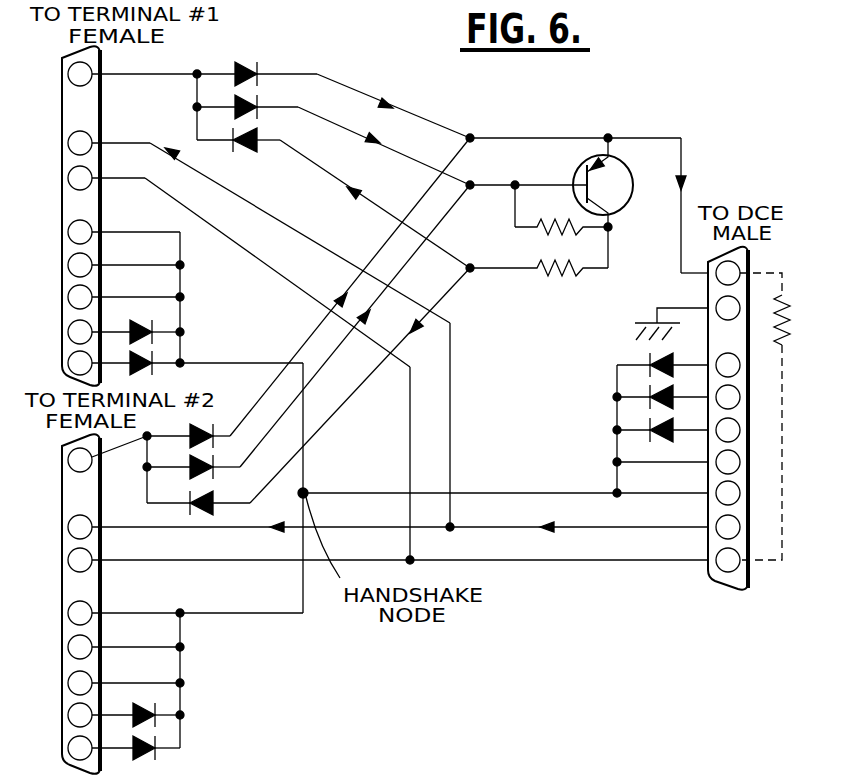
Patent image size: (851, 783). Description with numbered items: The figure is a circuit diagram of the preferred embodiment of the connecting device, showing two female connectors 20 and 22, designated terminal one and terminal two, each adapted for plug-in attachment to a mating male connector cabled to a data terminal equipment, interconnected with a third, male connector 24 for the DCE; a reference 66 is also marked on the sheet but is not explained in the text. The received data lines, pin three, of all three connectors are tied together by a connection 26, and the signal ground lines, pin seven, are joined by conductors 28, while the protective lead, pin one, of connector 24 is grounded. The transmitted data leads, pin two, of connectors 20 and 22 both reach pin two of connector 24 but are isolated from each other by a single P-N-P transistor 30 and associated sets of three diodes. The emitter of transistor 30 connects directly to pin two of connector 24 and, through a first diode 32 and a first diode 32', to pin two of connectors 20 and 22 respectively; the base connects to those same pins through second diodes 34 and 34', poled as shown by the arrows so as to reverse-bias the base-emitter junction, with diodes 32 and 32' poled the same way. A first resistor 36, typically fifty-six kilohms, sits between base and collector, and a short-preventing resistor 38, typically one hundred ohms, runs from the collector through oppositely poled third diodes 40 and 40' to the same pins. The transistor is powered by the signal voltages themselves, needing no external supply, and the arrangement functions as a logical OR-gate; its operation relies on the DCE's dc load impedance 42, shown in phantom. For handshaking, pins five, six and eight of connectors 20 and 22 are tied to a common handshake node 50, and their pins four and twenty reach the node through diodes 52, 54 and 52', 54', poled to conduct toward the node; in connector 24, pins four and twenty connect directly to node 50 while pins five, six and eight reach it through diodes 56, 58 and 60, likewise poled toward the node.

The female connector 20 is at (62, 143).
The female connector 22 is at (62, 527).
The male connector 24 is at (748, 440).
The connection 26 is at (612, 527).
The conductors 28 is at (580, 562).
The transistor 30 is at (632, 192).
The first diode 32 is at (352, 89).
The second diode 34 is at (352, 132).
The first resistor 36 is at (548, 236).
The short-preventing resistor 38 is at (575, 276).
The third diode 40 is at (351, 189).
The dc load impedance 42 is at (790, 290).
The handshake node 50 is at (308, 496).
The diode 52 is at (179, 319).
The diode 54 is at (216, 351).
The diode 56 is at (647, 357).
The diode 58 is at (648, 406).
The diode 60 is at (648, 440).
The first diode 32' is at (330, 293).
The second diode 34' is at (330, 332).
The third diode 40' is at (330, 391).
The diode 52' is at (186, 706).
The diode 54' is at (169, 759).
The circuit 66 is at (494, 777).